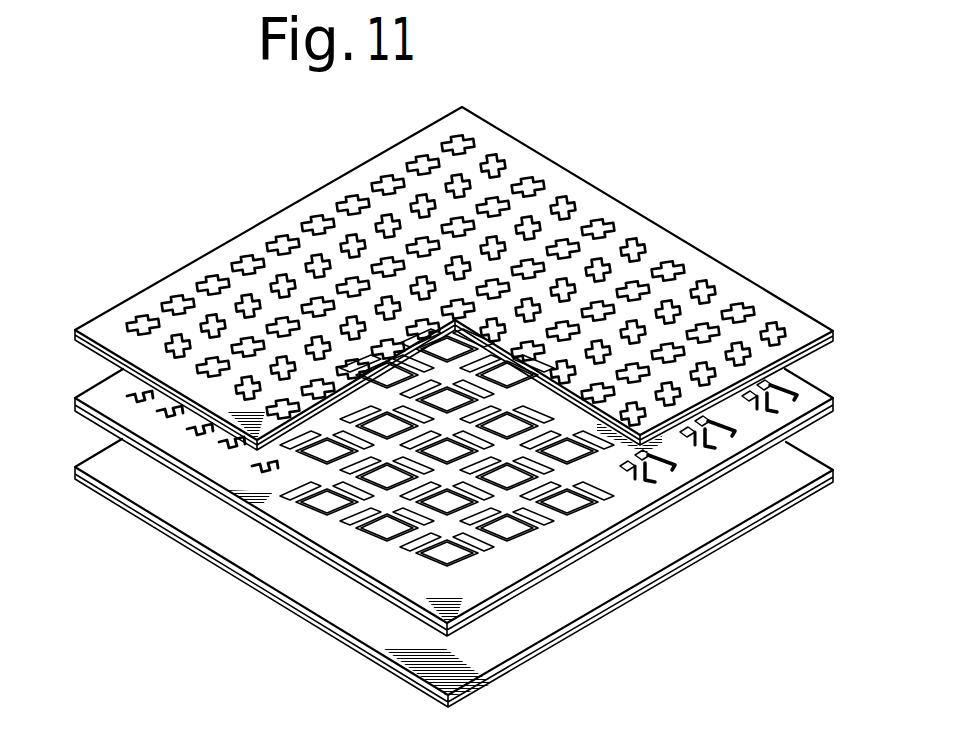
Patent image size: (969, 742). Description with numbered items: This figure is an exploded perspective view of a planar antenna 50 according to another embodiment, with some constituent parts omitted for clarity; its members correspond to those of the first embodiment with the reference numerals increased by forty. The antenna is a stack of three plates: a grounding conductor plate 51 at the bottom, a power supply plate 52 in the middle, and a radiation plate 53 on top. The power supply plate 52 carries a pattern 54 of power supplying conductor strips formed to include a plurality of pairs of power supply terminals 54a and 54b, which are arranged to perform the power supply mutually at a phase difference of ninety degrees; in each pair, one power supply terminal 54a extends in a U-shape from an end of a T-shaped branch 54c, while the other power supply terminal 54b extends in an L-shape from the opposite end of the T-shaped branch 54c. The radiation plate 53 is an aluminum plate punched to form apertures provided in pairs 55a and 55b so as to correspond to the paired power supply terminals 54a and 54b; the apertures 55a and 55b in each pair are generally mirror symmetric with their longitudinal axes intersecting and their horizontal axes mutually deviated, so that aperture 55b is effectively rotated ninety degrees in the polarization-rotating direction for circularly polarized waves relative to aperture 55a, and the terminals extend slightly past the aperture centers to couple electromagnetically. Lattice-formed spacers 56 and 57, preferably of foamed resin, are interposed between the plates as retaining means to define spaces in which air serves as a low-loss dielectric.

The planar antenna 50 is at (672, 212).
The grounding conductor plate 51 is at (757, 503).
The power supply plate 52 is at (813, 397).
The radiation plate 53 is at (800, 322).
The pattern of power supplying conductor strips 54 is at (212, 440).
The power supply terminal 54a is at (135, 397).
The power supply terminal 54b is at (177, 410).
The T-shaped branch 54c is at (135, 395).
The aperture 55a is at (475, 203).
The aperture 55b is at (560, 200).
The spacer 56 is at (383, 577).
The spacer 57 is at (345, 487).